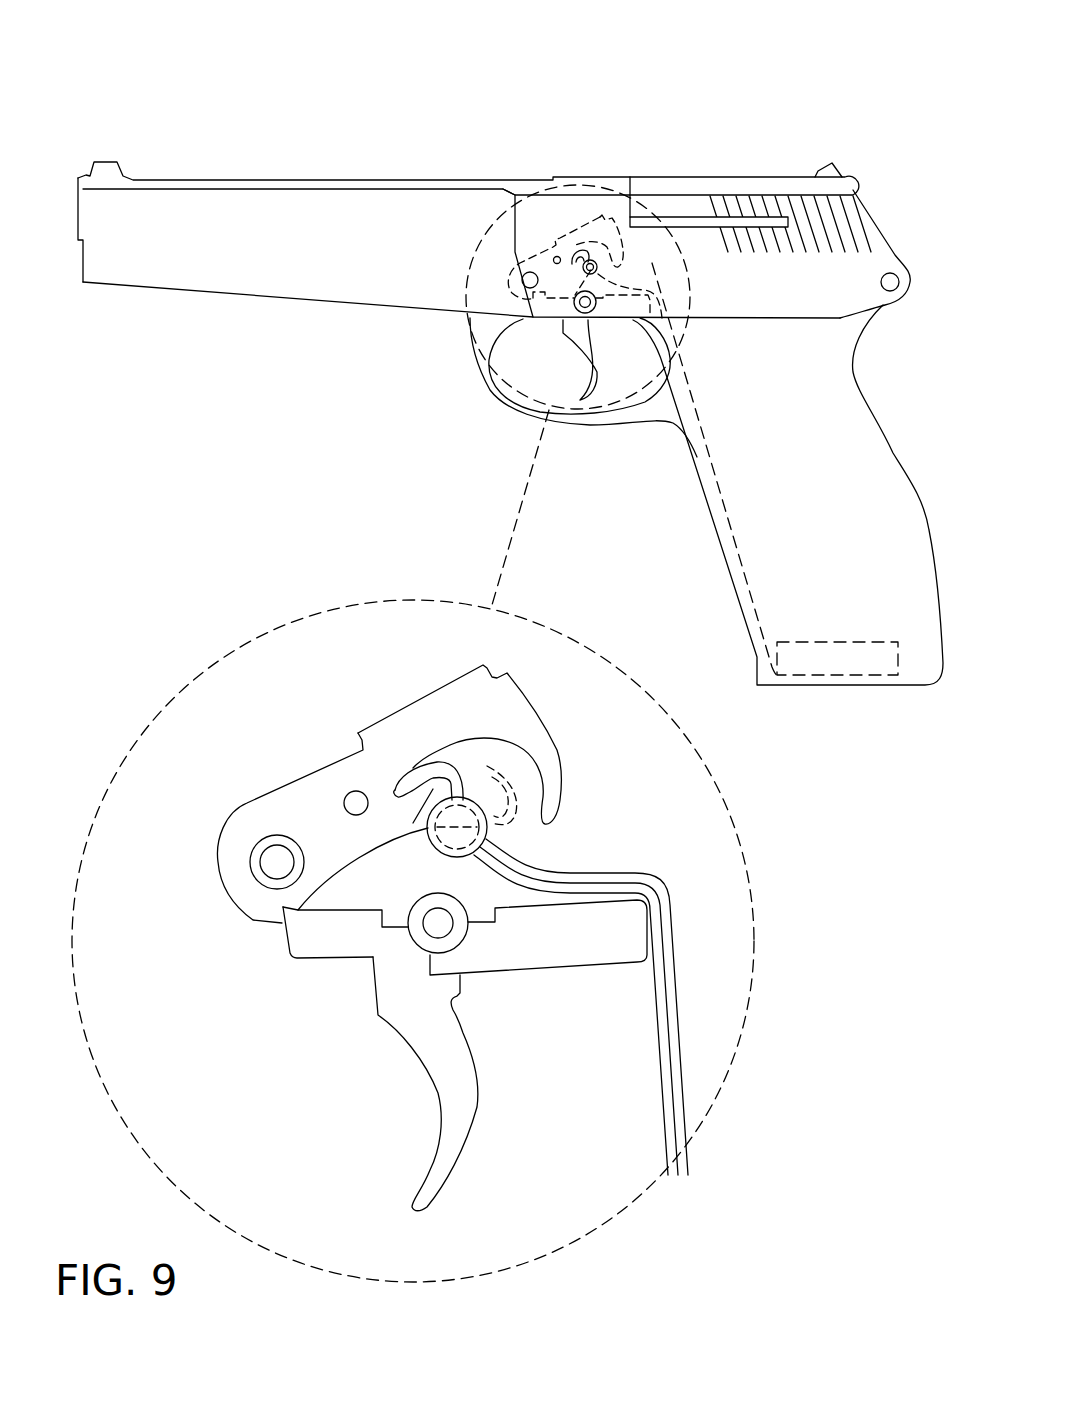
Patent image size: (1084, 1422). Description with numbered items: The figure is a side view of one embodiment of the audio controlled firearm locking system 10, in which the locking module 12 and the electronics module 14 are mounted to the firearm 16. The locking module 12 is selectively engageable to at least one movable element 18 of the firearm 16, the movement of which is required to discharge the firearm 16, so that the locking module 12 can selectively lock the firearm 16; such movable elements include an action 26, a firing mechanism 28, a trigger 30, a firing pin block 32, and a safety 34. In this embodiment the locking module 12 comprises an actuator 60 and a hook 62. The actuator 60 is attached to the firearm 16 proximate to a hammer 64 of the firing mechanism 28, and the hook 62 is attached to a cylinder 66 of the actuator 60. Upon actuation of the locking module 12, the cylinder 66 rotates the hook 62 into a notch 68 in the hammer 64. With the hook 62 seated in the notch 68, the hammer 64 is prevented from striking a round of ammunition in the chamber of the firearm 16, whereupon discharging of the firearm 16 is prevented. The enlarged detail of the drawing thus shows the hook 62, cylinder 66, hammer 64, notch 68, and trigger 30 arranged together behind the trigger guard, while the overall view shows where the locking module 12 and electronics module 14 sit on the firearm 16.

The audio controlled firearm locking system 10 is at (735, 120).
The locking module 12 is at (588, 270).
The electronics module 14 is at (843, 660).
The firearm 16 is at (345, 180).
The movable element 18 is at (660, 235).
The action 26 is at (552, 255).
The firing mechanism 28 is at (587, 250).
The trigger 30 is at (450, 1060).
The firing pin block 32 is at (792, 217).
The safety 34 is at (442, 927).
The actuator 60 is at (434, 847).
The hook 62 is at (425, 775).
The hammer 64 is at (503, 717).
The cylinder 66 is at (428, 828).
The notch 68 is at (453, 753).